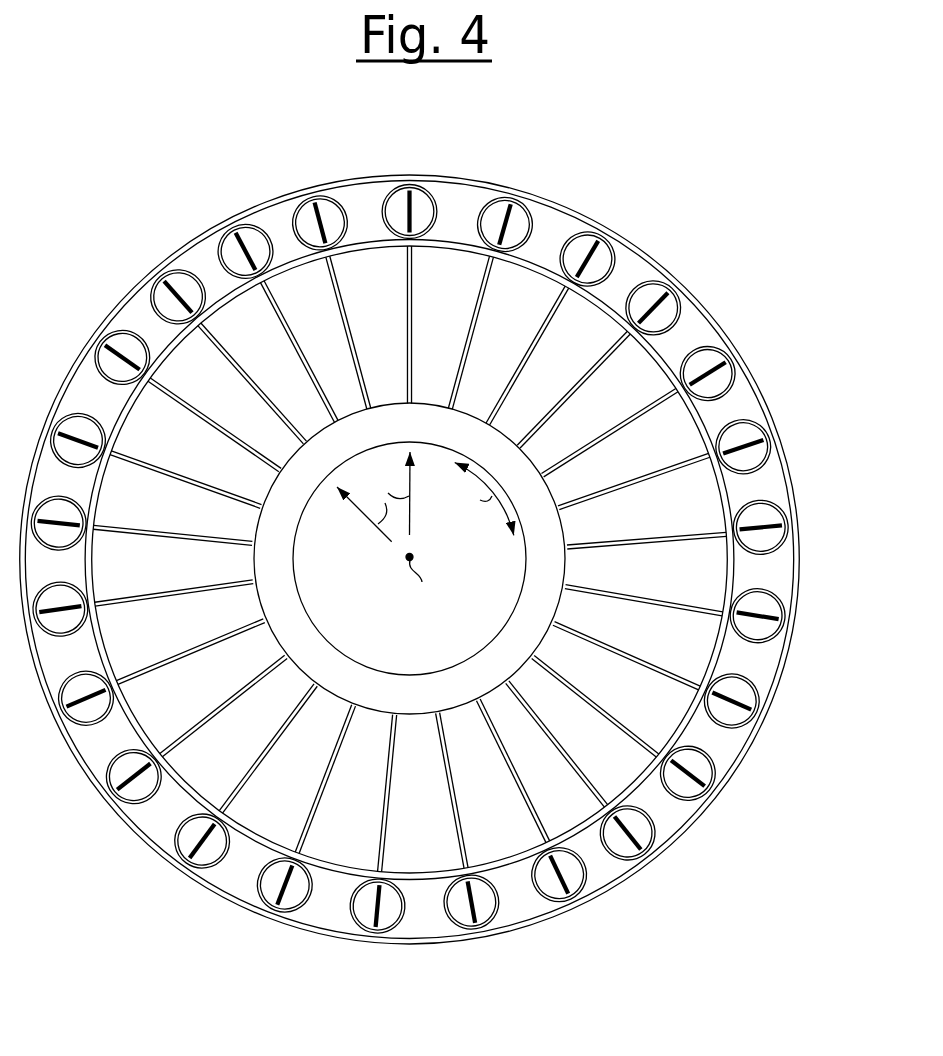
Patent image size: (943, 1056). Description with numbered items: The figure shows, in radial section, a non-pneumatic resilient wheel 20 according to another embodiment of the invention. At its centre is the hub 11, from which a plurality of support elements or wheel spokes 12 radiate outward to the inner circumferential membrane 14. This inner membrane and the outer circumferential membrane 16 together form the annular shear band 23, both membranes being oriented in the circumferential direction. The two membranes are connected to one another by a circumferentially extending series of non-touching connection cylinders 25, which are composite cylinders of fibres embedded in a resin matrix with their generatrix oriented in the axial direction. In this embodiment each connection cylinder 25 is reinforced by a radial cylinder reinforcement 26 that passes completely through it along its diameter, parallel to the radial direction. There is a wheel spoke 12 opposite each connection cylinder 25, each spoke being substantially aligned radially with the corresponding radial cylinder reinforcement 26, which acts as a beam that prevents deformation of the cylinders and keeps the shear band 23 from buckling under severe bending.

The hub 11 is at (284, 611).
The wheel spokes 12 is at (488, 283).
The inner circumferential membrane 14 is at (364, 246).
The outer circumferential membrane 16 is at (288, 202).
The wheel 20 is at (636, 170).
The annular shear band 23 is at (210, 277).
The connection cylinders 25 is at (490, 203).
The radial cylinder reinforcement 26 is at (746, 438).